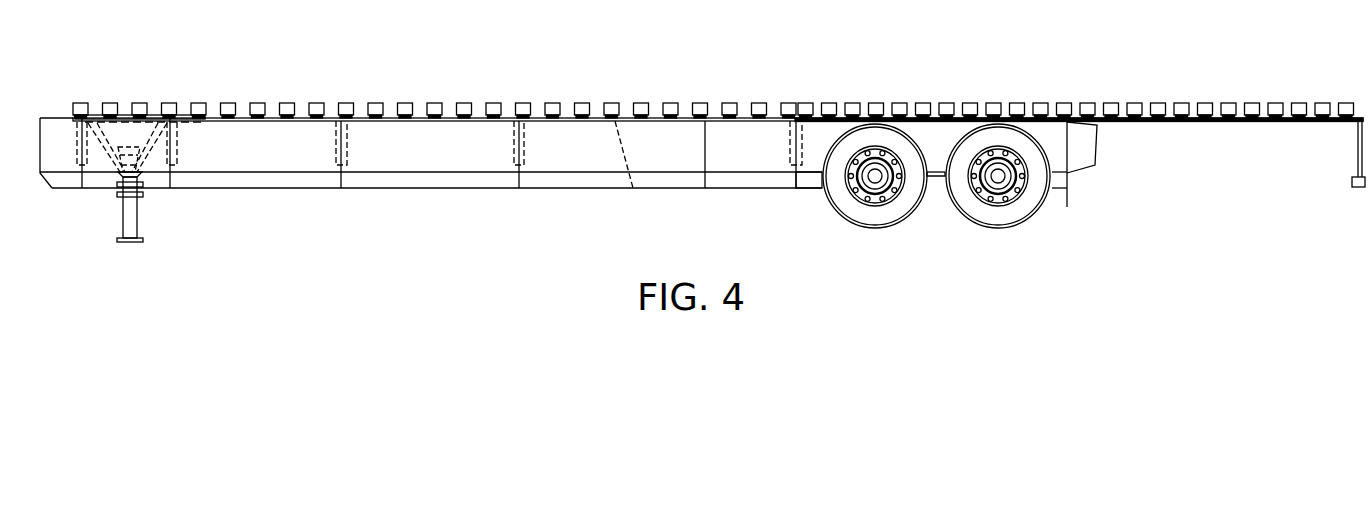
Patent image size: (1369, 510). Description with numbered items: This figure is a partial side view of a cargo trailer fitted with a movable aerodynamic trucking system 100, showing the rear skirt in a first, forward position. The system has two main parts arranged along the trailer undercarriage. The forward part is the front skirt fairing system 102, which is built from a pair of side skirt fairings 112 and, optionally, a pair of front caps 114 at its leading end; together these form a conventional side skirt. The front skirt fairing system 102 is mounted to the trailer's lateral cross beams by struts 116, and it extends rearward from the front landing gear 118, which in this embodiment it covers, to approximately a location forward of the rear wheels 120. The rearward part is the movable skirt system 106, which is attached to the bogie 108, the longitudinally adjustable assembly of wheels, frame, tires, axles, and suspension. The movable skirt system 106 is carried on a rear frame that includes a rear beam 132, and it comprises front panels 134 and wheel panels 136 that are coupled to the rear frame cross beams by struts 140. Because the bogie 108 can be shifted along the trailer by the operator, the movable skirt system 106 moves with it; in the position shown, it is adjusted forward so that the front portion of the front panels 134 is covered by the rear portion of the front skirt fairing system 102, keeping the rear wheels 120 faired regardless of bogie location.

The movable aerodynamic trucking system 100 is at (460, 252).
The front skirt fairing system 102 is at (392, 234).
The movable skirt system 106 is at (940, 205).
The bogie 108 is at (79, 104).
The side skirt fairings 112 is at (254, 172).
The front caps 114 is at (63, 163).
The struts 116 is at (73, 150).
The landing gear 118 is at (128, 243).
The rear wheels 120 is at (872, 218).
The rear beam 132 is at (672, 162).
The front panels 134 is at (945, 137).
The wheel panels 136 is at (1087, 150).
The struts 140 is at (795, 160).